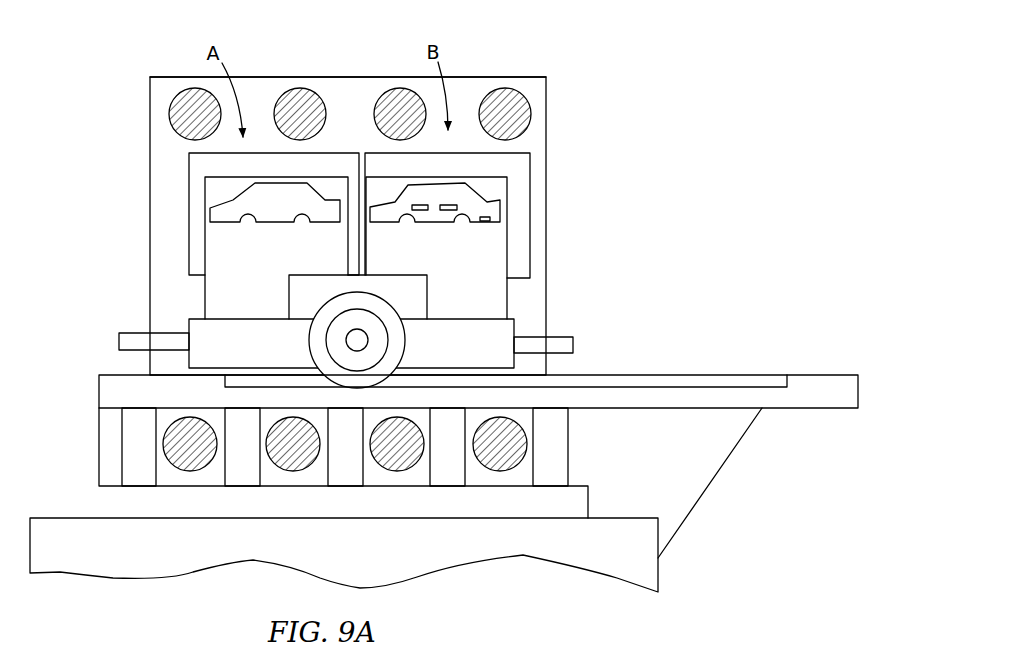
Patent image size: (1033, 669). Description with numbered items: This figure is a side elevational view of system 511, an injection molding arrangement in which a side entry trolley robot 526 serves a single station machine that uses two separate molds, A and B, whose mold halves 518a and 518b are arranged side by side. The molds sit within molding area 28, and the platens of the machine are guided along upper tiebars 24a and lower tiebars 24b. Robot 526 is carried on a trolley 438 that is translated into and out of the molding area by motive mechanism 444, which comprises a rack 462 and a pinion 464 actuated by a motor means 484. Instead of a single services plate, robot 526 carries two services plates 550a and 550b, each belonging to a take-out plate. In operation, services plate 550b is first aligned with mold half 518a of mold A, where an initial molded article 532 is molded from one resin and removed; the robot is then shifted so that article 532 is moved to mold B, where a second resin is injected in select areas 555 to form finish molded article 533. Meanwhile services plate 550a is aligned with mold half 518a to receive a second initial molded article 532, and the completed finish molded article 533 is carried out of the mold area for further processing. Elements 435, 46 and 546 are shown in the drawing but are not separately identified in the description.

The upper tiebars 24a is at (175, 115).
The lower tiebars 24b is at (487, 467).
The molding area 28 is at (470, 98).
The roller support blocks 46 is at (560, 445).
The base plate 435 is at (122, 390).
The trolley 438 is at (202, 353).
The motive mechanism 444 is at (420, 342).
The rack 462 is at (632, 383).
The pinion 464 is at (333, 340).
The motor means 484 is at (298, 287).
The system 511 is at (612, 68).
The mold half 518a is at (195, 165).
The mold half 518b is at (520, 163).
The side entry trolley robot 526 is at (175, 208).
The initial molded article 532 is at (255, 200).
The finish molded article 533 is at (465, 190).
The lower support base 546 is at (145, 473).
The services plate 550a is at (212, 188).
The services plate 550b is at (493, 248).
The select areas 555 is at (484, 220).